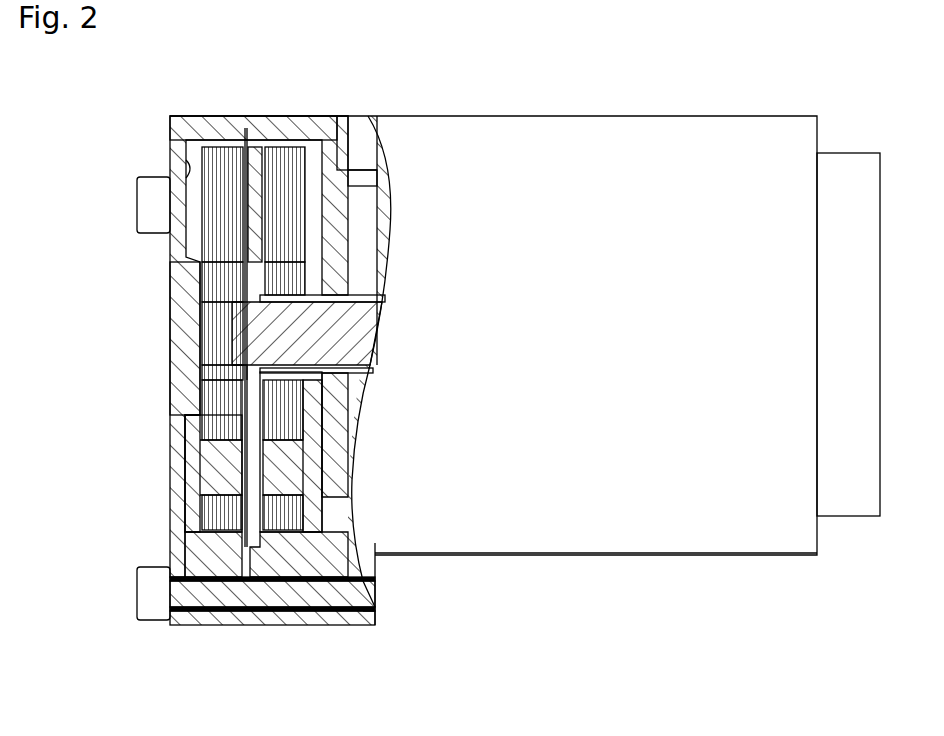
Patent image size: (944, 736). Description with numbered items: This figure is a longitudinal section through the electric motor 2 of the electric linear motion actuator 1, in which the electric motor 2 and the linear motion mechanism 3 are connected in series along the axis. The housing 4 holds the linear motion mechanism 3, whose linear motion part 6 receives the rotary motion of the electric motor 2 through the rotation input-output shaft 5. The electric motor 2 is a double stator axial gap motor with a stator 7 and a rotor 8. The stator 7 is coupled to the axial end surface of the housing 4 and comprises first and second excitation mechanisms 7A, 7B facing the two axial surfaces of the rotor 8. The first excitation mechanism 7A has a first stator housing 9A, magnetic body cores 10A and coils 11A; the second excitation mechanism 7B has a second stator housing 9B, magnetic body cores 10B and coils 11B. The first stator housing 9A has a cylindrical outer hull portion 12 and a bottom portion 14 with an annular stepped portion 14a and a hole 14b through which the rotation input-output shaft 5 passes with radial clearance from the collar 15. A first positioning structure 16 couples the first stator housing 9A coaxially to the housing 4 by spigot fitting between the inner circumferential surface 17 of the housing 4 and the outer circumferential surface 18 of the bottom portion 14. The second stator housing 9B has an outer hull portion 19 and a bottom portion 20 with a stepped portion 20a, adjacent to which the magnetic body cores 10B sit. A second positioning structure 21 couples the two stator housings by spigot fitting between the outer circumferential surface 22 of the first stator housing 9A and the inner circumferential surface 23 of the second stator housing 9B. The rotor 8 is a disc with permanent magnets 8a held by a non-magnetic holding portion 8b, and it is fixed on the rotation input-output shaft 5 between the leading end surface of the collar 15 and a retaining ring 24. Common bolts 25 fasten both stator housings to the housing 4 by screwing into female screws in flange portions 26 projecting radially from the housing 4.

The electric linear motion actuator 1 is at (752, 90).
The electric motor 2 is at (346, 100).
The linear motion mechanism 3 is at (852, 502).
The housing 4 is at (530, 553).
The rotation input-output shaft 5 is at (340, 325).
The linear motion part 6 is at (836, 339).
The stator 7 is at (325, 688).
The first excitation mechanism 7A is at (290, 598).
The second excitation mechanism 7B is at (213, 598).
The rotor 8 is at (218, 126).
The permanent magnets 8a is at (218, 470).
The holding portion 8b is at (215, 395).
The first stator housing 9A is at (332, 613).
The second stator housing 9B is at (192, 556).
The magnetic body cores 10A is at (305, 480).
The magnetic body cores 10B is at (192, 455).
The coils 11A is at (345, 555).
The coils 11B is at (192, 560).
The outer hull portion 12 is at (345, 128).
The bottom portion 14 is at (345, 433).
The stepped portion 14a is at (387, 223).
The hole 14b is at (325, 393).
The collar 15 is at (362, 297).
The first positioning structure 16 is at (575, 72).
The inner circumferential surface 17 is at (383, 192).
The outer circumferential surface 18 is at (353, 150).
The outer hull portion 19 is at (183, 118).
The bottom portion 20 is at (178, 305).
The stepped portion 20a is at (188, 170).
The second positioning structure 21 is at (330, 72).
The outer circumferential surface 22 is at (246, 124).
The inner circumferential surface 23 is at (272, 124).
The retaining ring 24 is at (238, 368).
The bolts 25 is at (146, 208).
The flange portions 26 is at (372, 614).